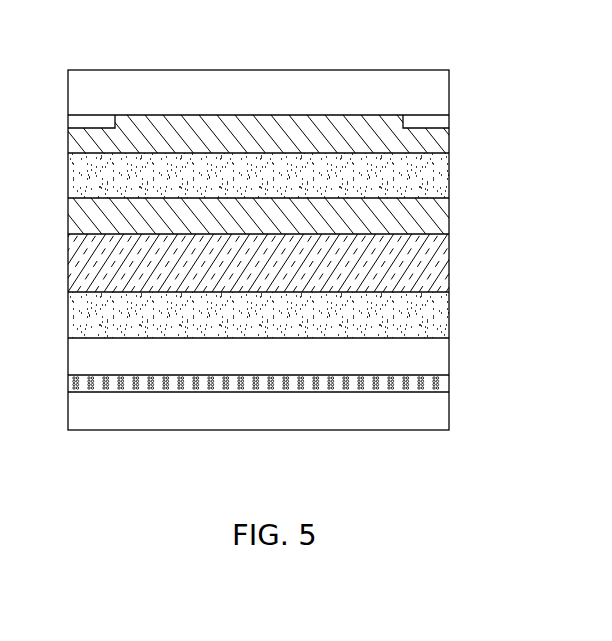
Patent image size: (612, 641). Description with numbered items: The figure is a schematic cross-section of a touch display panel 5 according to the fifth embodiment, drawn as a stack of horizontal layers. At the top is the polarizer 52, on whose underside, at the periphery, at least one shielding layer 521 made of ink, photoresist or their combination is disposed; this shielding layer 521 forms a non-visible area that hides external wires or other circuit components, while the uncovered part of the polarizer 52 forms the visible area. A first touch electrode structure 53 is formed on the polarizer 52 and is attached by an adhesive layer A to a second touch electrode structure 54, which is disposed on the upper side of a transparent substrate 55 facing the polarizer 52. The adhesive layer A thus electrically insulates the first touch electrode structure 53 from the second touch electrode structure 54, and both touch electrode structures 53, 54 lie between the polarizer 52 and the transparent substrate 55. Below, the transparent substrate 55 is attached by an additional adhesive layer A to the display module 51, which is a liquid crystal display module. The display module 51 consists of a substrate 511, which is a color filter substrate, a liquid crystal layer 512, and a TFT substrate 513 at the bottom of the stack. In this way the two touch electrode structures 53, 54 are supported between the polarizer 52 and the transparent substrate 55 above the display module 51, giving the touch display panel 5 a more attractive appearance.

The touch display panel 5 is at (108, 45).
The polarizer 52 is at (433, 92).
The shielding layer 521 is at (440, 123).
The first touch electrode structure 53 is at (443, 143).
The adhesive layer A is at (440, 178).
The second touch electrode structure 54 is at (440, 217).
The transparent substrate 55 is at (433, 260).
The display module 51 is at (309, 380).
The substrate 511 is at (433, 358).
The liquid crystal layer 512 is at (440, 383).
The TFT substrate 513 is at (292, 407).